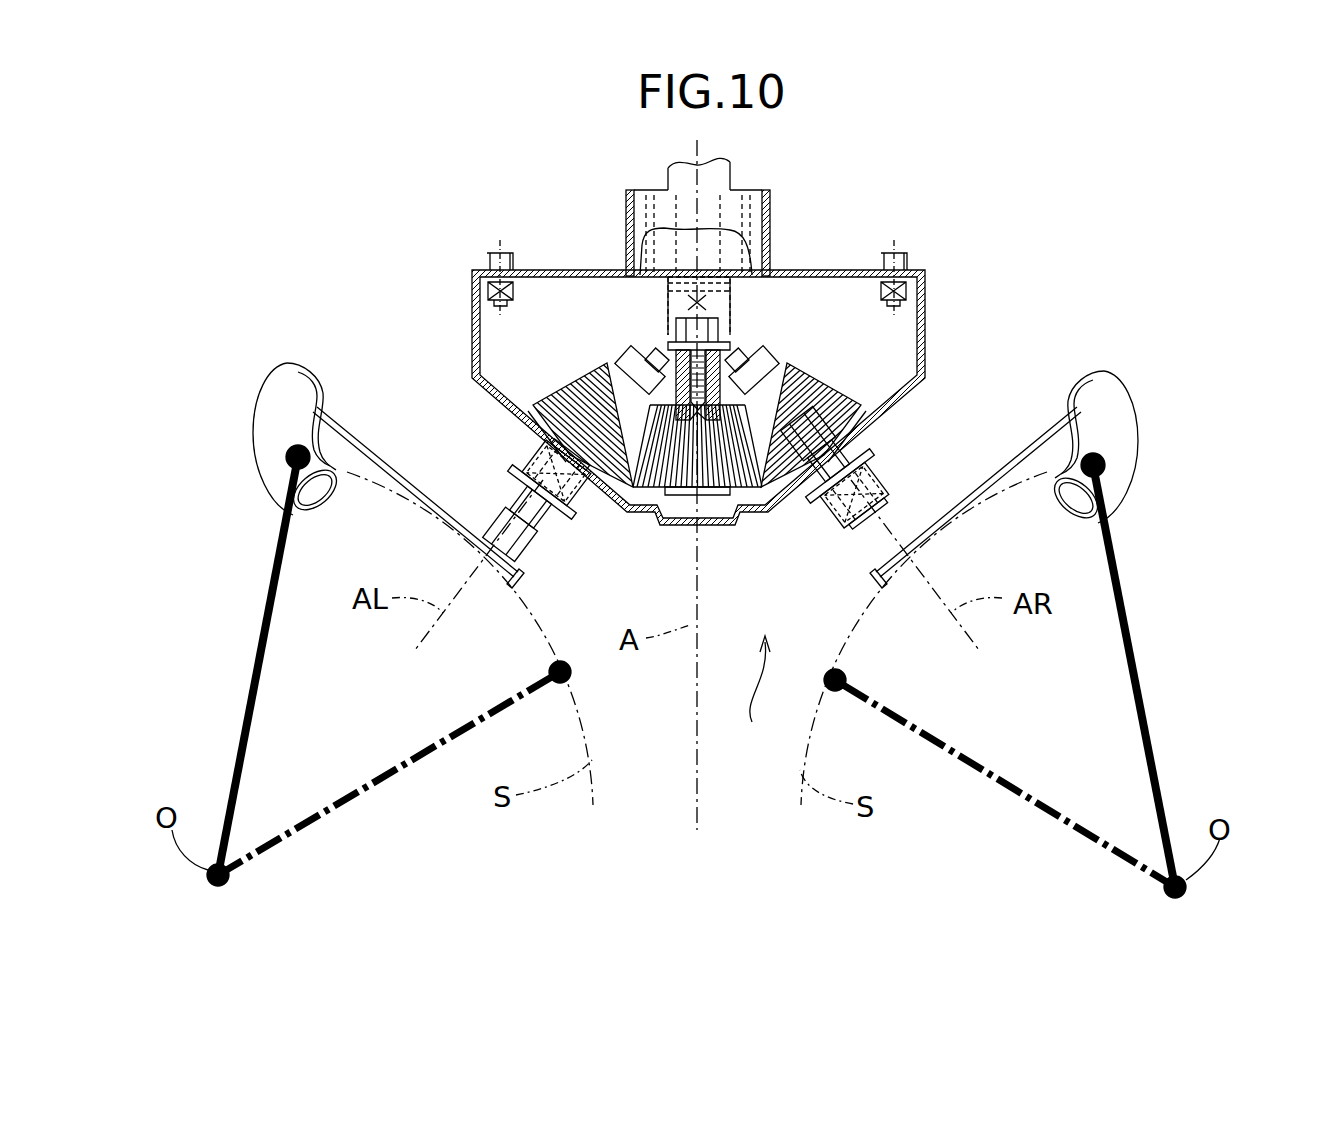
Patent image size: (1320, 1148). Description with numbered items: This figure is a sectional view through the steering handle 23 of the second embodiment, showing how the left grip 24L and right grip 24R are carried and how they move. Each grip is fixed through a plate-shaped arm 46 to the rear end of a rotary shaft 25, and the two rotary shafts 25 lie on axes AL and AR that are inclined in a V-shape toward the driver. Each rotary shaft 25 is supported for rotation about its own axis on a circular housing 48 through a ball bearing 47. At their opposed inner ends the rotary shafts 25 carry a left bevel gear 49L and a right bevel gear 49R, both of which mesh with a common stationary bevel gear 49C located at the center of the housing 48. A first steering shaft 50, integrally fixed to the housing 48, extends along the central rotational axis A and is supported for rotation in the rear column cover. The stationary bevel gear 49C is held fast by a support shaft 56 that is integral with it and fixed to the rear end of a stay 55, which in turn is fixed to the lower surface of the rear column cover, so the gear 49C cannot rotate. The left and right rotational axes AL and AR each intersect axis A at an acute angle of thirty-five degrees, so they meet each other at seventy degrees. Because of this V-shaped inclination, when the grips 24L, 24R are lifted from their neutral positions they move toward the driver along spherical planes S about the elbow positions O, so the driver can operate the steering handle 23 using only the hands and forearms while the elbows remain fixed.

The steering handle 23 is at (753, 697).
The left grip 24L is at (274, 400).
The right grip 24R is at (1126, 409).
The rotary shaft 25 is at (540, 500).
The plate-shaped arm 46 is at (373, 448).
The ball bearing 47 is at (528, 437).
The circular housing 48 is at (925, 338).
The left bevel gear 49L is at (575, 393).
The right bevel gear 49R is at (813, 392).
The stationary bevel gear 49C is at (690, 487).
The first steering shaft 50 is at (776, 220).
The stay 55 is at (665, 173).
The support shaft 56 is at (674, 360).